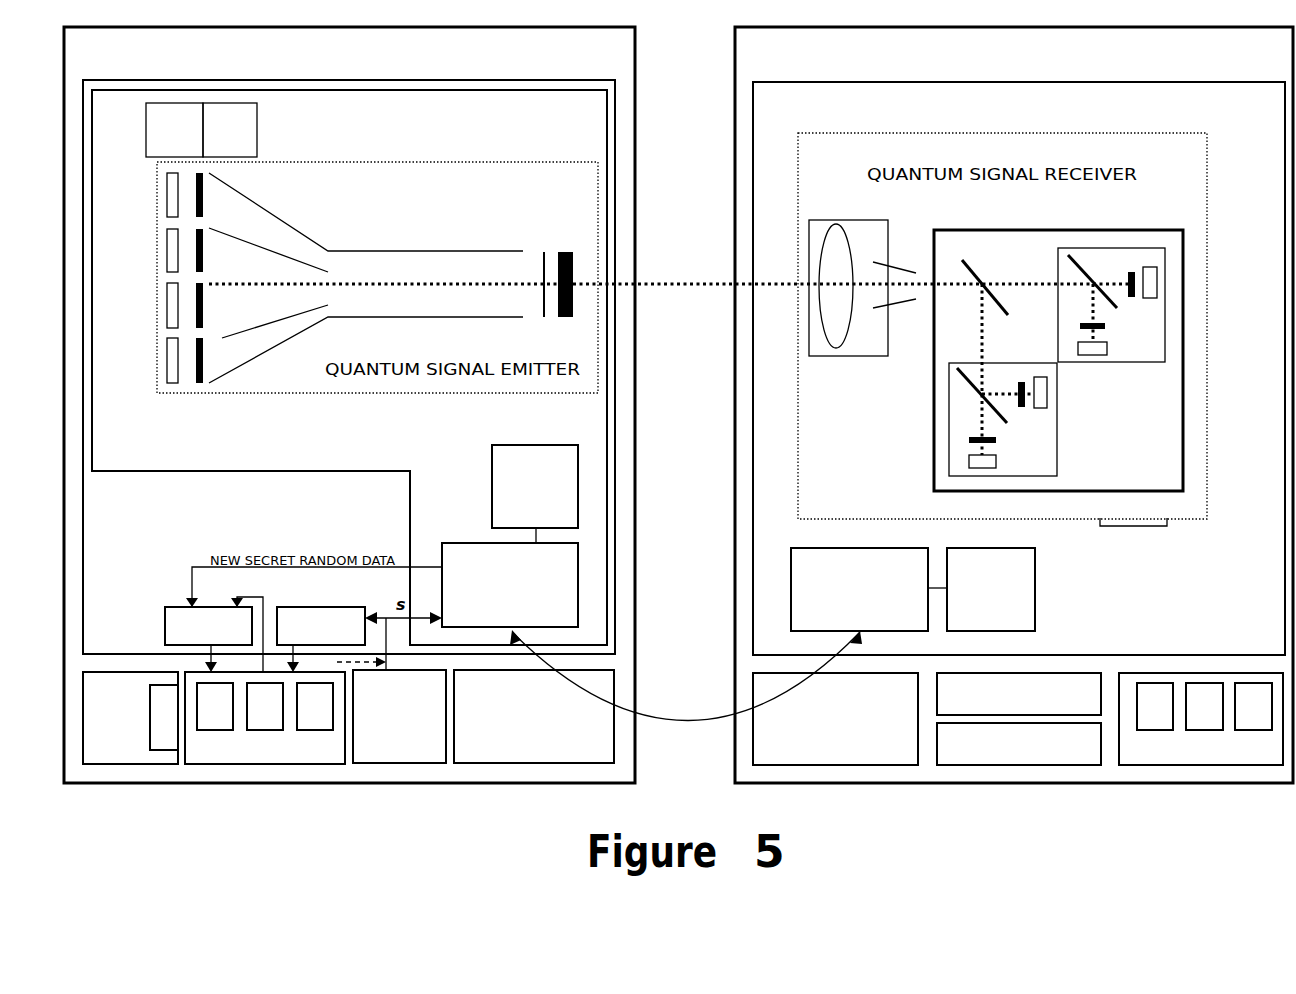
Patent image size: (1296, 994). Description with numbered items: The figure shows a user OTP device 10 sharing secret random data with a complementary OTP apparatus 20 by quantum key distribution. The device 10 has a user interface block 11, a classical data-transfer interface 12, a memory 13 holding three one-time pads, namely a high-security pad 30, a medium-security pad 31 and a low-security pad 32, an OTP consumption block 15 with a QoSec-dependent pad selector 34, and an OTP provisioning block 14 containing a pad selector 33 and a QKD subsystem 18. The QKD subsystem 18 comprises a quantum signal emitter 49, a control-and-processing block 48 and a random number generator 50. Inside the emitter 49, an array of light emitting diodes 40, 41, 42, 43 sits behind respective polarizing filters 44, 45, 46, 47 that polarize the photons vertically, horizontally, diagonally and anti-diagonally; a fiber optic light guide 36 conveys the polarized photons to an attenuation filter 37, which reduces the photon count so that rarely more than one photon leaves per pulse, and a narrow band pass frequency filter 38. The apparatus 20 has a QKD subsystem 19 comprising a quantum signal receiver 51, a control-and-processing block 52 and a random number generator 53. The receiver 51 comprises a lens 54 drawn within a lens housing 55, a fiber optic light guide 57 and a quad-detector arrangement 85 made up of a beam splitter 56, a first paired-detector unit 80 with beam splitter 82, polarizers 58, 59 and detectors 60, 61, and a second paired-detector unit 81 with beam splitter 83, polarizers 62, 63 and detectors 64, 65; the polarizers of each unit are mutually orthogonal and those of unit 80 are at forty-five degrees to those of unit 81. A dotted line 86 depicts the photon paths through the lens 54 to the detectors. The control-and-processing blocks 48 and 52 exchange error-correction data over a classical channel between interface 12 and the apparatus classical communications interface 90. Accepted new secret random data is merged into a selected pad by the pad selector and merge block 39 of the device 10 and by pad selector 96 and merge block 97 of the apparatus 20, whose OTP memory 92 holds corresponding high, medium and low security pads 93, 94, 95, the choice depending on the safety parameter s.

The user OTP device 10 is at (425, 63).
The user interface block 11 is at (424, 741).
The classical data-transfer interface 12 is at (595, 753).
The memory 13 is at (324, 755).
The OTP provisioning block 14 is at (375, 524).
The OTP consumption block 15 is at (128, 734).
The QKD subsystem 18 is at (593, 138).
The QKD subsystem 19 is at (986, 116).
The complementary OTP apparatus 20 is at (1120, 63).
The high-security one-time pad 30 is at (205, 716).
The medium-security one-time pad 31 is at (255, 716).
The low-security one-time pad 32 is at (305, 716).
The pad selector 33 is at (340, 608).
The QoSec-dependent pad selector 34 is at (173, 734).
The fiber optic light guide 36 is at (418, 250).
The attenuation filter 37 is at (543, 265).
The narrow band pass frequency filter 38 is at (566, 250).
The pad selector / merge functional block 39 is at (165, 620).
The light emitting diode 40 is at (165, 193).
The light emitting diode 41 is at (165, 247).
The light emitting diode 42 is at (165, 303).
The light emitting diode 43 is at (165, 350).
The polarizing filter 44 is at (203, 172).
The polarizing filter 45 is at (196, 236).
The polarizing filter 46 is at (196, 324).
The polarizing filter 47 is at (203, 383).
The control-and-processing functional block 48 is at (474, 543).
The quantum signal emitter 49 is at (551, 396).
The random number generator 50 is at (491, 468).
The quantum signal receiver 51 is at (794, 548).
The control-and-processing functional block 52 is at (1143, 520).
The random number generator 53 is at (1036, 588).
The lens 54 is at (829, 272).
The lens housing 55 is at (824, 358).
The beam splitter 56 is at (985, 277).
The fiber optic light guide 57 is at (896, 303).
The polarizer 58 is at (1137, 282).
The polarizer 59 is at (1106, 326).
The detector 60 is at (1158, 272).
The detector 61 is at (1098, 350).
The polarizer 62 is at (968, 440).
The polarizer 63 is at (1022, 408).
The detector 64 is at (980, 458).
The detector 65 is at (1043, 400).
The first paired-detector unit 80 is at (1110, 247).
The second paired-detector unit 81 is at (949, 392).
The beam splitter 82 is at (1068, 257).
The beam splitter 83 is at (997, 393).
The quad-detector arrangement 85 is at (1106, 460).
The dotted line 86 is at (950, 283).
The classical communications interface 90 is at (790, 748).
The OTP memory 92 is at (1260, 755).
The high-security one-time pad 93 is at (1145, 716).
The medium-security one-time pad 94 is at (1194, 716).
The low-security one-time pad 95 is at (1243, 716).
The pad selector 96 is at (1088, 703).
The merge functional block 97 is at (1058, 753).